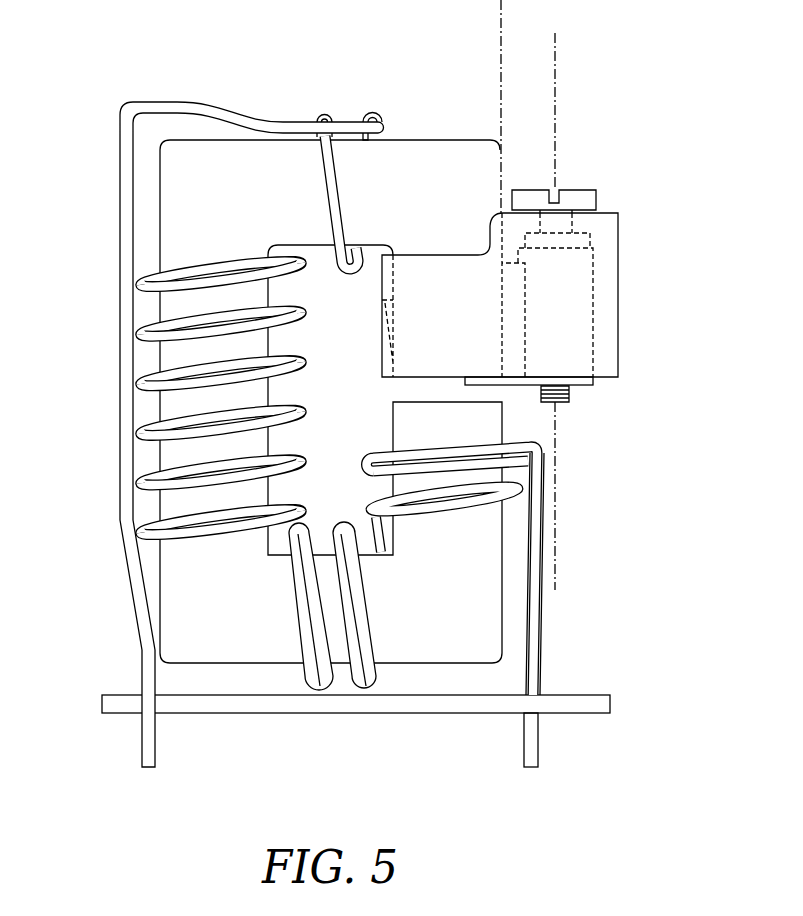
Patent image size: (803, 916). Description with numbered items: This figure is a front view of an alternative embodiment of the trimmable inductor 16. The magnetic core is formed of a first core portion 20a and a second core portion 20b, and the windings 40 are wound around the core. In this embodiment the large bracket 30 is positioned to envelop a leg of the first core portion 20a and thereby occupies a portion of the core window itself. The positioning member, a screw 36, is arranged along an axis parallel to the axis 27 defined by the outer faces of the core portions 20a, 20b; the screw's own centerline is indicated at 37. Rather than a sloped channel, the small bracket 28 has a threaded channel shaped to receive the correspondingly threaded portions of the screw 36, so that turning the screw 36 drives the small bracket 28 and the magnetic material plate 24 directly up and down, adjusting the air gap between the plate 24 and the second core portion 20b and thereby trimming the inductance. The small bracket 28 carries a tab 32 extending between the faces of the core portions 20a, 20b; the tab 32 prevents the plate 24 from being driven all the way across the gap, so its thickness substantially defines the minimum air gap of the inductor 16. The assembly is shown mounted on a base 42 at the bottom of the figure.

The trimmable inductor 16 is at (100, 77).
The first core portion 20a is at (455, 158).
The second core portion 20b is at (482, 563).
The magnetic material plate 24 is at (530, 333).
The axis 27 is at (500, 3).
The small bracket 28 is at (597, 293).
The large bracket 30 is at (622, 240).
The tab 32 is at (490, 383).
The screw 36 is at (583, 188).
The screw axis 37 is at (556, 63).
The windings 40 is at (207, 408).
The base 42 is at (118, 690).